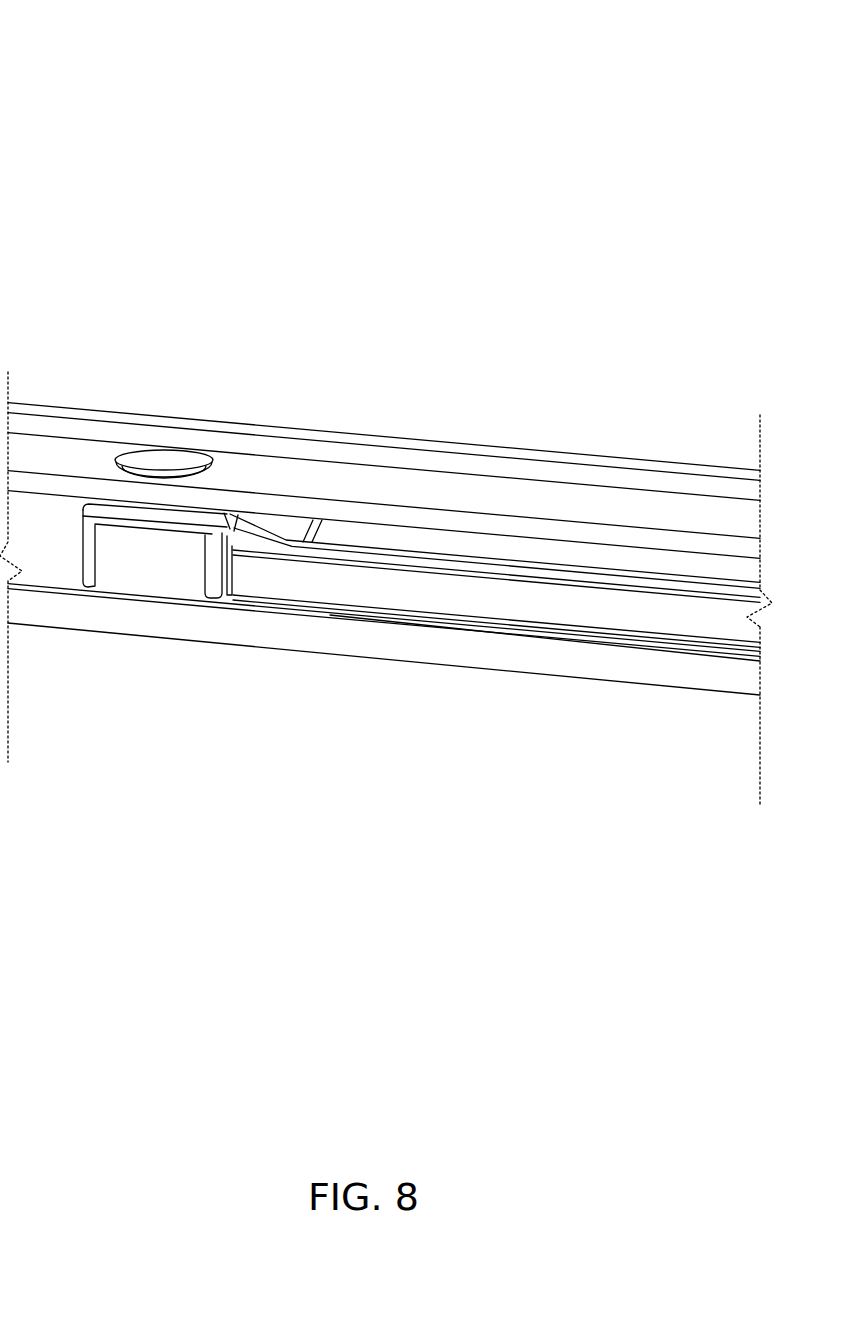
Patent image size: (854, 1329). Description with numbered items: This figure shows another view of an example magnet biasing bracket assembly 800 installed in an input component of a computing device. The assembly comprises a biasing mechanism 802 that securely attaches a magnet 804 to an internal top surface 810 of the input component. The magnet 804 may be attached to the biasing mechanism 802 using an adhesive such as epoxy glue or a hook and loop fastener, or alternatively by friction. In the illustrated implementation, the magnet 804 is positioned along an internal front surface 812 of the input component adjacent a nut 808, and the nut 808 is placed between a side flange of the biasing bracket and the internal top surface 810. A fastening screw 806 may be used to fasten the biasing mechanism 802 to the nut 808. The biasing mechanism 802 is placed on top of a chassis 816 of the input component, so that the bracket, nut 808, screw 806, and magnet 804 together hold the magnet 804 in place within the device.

The magnet biasing bracket assembly 800 is at (110, 60).
The biasing mechanism 802 is at (482, 552).
The magnet 804 is at (345, 587).
The fastening screw 806 is at (167, 460).
The nut 808 is at (187, 583).
The internal top surface 810 is at (455, 643).
The internal front surface 812 is at (528, 448).
The chassis 816 is at (578, 535).